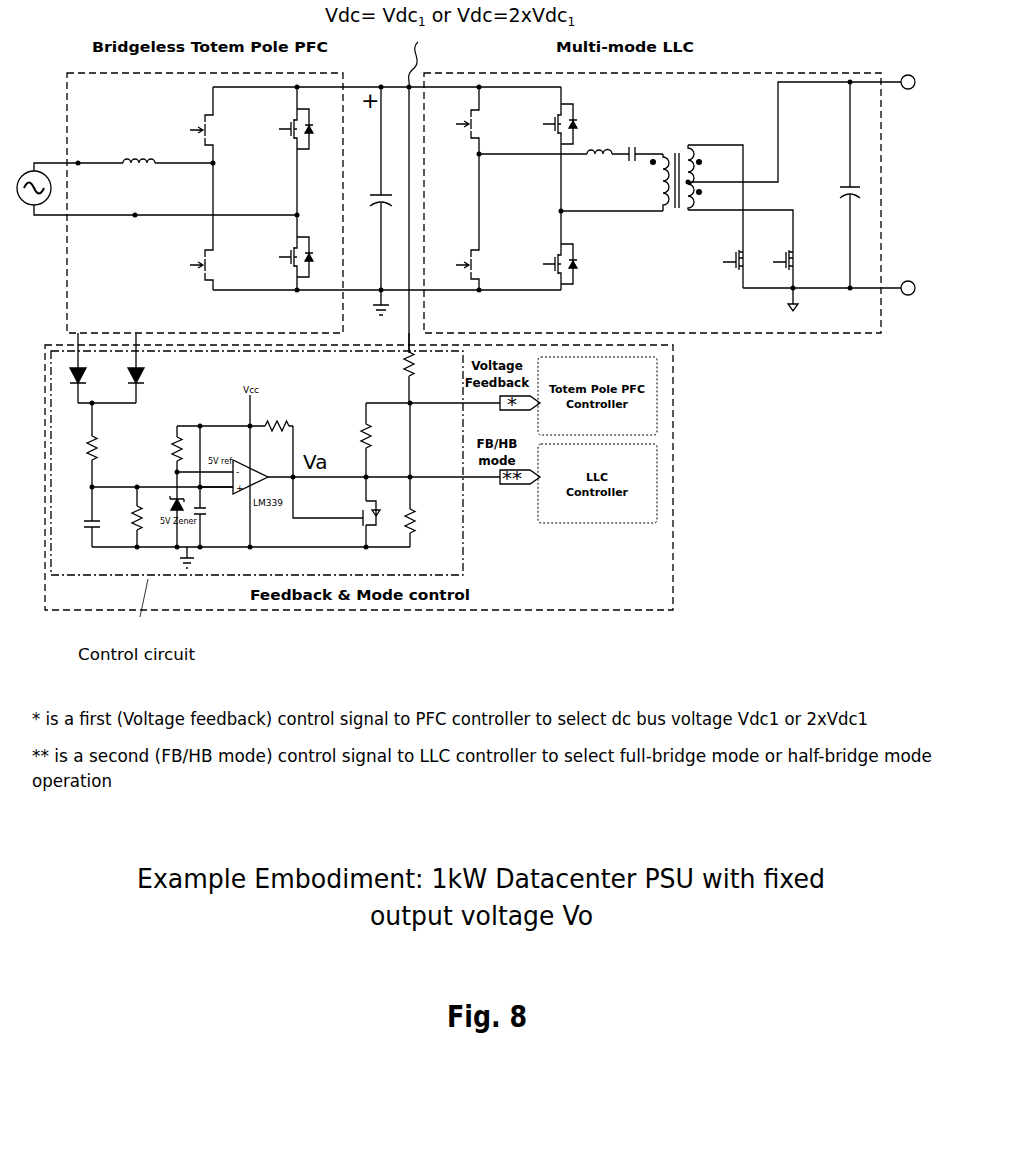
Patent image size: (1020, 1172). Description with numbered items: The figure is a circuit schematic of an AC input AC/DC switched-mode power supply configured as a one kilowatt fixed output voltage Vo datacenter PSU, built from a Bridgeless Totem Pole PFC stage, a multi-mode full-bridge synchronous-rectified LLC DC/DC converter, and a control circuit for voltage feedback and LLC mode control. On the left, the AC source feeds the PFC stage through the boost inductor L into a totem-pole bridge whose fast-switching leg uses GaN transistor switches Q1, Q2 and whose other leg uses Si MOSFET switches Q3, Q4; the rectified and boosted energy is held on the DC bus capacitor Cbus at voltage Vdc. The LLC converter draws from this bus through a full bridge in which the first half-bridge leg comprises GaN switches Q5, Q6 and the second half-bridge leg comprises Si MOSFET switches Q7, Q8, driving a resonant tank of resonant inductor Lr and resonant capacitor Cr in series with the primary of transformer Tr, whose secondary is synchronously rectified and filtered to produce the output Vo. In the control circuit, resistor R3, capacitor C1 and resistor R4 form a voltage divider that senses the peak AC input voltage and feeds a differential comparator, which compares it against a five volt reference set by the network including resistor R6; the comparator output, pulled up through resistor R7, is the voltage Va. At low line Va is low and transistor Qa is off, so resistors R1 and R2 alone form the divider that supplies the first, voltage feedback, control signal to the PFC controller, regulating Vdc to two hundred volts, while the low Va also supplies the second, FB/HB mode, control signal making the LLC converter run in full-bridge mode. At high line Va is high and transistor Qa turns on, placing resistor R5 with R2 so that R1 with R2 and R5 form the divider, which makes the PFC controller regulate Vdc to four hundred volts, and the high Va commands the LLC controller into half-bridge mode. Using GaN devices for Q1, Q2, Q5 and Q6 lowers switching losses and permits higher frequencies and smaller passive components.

The switch Q1 is at (186, 125).
The switch Q2 is at (186, 252).
The switch Q3 is at (280, 151).
The switch Q4 is at (280, 252).
The inductor L is at (139, 149).
The DC bus capacitor Cbus is at (368, 201).
The switch Q5 is at (458, 120).
The switch Q6 is at (458, 222).
The switch Q7 is at (552, 149).
The switch Q8 is at (552, 250).
The resonant inductor Lr is at (599, 169).
The resonant capacitor Cr is at (630, 167).
The transformer Tr is at (676, 164).
The output voltage Vo is at (919, 185).
The resistor R1 is at (395, 368).
The resistor R2 is at (427, 519).
The resistor R3 is at (72, 445).
The resistor R4 is at (121, 517).
The resistor R5 is at (344, 434).
The resistor R6 is at (160, 449).
The resistor R7 is at (271, 408).
The capacitor C1 is at (74, 517).
The transistor Qa is at (356, 512).